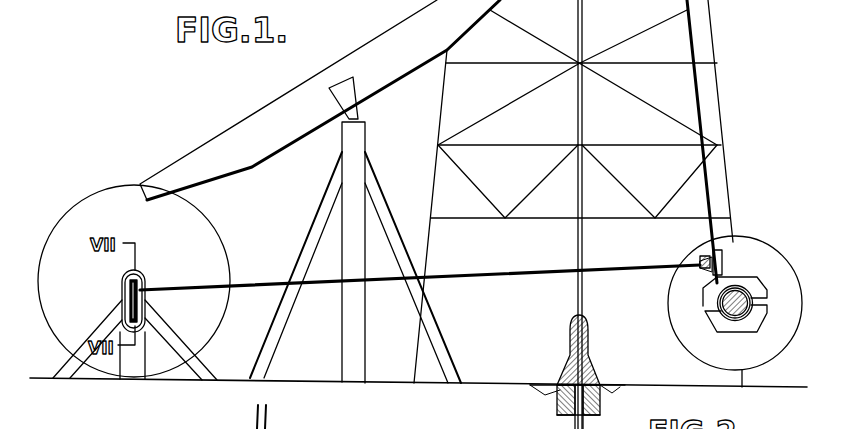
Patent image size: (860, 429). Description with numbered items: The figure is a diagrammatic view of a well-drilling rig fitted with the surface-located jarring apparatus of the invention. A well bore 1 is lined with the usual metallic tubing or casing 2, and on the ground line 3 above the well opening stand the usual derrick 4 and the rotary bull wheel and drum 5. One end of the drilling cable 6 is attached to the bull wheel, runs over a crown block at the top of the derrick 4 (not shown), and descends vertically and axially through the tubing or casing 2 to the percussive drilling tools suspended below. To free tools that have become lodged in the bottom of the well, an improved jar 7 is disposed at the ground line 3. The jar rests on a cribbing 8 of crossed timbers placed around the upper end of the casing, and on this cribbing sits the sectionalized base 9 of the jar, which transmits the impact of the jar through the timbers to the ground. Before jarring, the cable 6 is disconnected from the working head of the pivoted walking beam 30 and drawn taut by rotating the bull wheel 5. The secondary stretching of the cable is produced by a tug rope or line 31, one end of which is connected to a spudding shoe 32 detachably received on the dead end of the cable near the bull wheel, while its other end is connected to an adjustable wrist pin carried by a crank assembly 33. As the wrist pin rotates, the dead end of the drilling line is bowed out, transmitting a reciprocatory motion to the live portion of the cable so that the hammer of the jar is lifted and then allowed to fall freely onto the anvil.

The well bore 1 is at (572, 416).
The tubing or casing 2 is at (600, 411).
The ground line 3 is at (472, 383).
The derrick 4 is at (716, 135).
The rotary bull wheel and drum 5 is at (737, 294).
The drilling cable 6 is at (583, 221).
The jar 7 is at (592, 352).
The cribbing 8 is at (560, 393).
The base 9 is at (597, 381).
The walking beam 30 is at (286, 104).
The tug rope or line 31 is at (514, 268).
The spudding shoe 32 is at (705, 258).
The crank assembly 33 is at (117, 296).